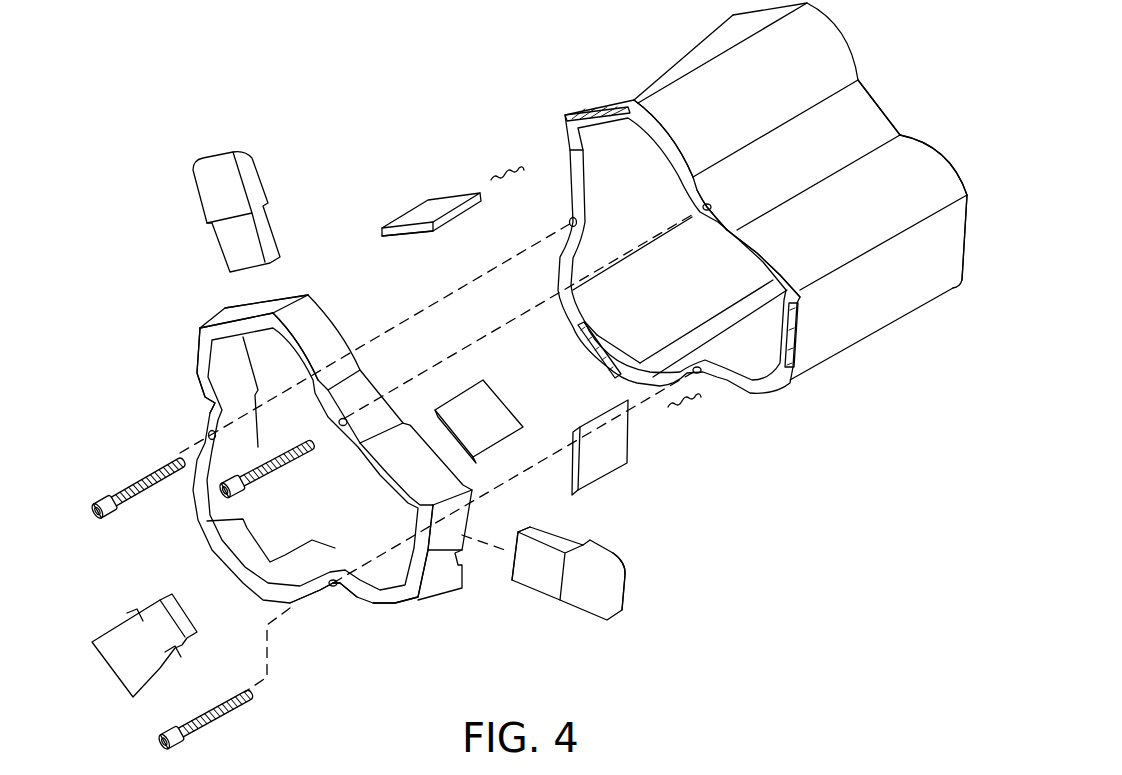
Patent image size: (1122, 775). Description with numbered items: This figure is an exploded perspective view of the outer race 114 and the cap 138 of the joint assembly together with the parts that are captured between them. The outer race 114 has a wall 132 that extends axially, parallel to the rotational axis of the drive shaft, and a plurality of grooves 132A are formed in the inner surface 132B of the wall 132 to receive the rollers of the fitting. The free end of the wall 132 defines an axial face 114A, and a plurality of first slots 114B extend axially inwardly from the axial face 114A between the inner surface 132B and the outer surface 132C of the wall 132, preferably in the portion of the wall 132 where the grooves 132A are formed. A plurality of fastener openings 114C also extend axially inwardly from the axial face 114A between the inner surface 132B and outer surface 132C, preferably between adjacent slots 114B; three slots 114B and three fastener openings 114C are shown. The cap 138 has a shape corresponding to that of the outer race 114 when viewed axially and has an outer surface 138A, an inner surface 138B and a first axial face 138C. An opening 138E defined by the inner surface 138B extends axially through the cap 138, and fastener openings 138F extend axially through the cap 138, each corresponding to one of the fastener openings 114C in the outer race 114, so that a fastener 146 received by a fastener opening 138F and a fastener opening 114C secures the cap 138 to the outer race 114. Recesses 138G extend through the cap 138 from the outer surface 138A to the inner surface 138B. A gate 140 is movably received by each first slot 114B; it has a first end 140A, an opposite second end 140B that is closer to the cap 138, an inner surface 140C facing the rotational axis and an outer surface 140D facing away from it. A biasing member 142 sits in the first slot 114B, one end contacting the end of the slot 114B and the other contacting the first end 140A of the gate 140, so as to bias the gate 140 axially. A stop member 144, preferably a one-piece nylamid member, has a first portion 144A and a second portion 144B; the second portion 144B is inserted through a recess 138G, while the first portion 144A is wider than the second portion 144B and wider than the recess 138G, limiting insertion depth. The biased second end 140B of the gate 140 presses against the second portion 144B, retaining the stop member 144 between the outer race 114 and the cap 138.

The outer race 114 is at (848, 30).
The axial face 114A is at (757, 253).
The first slots 114B is at (617, 140).
The fastener openings 114C is at (737, 180).
The wall 132 is at (866, 125).
The grooves 132A is at (578, 187).
The inner surface 132B is at (660, 170).
The outer surface 132C is at (893, 288).
The cap 138 is at (190, 352).
The outer surface 138A is at (313, 323).
The inner surface 138B is at (228, 375).
The first axial face 138C is at (220, 332).
The opening 138E is at (350, 505).
The fastener openings 138F is at (333, 586).
The recesses 138G is at (255, 305).
The gate 140 is at (518, 316).
The first end 140A is at (630, 435).
The second end 140B is at (407, 233).
The inner surface 140C is at (487, 421).
The outer surface 140D is at (420, 215).
The biasing member 142 is at (500, 168).
The stop member 144 is at (218, 157).
The first portion 144A is at (593, 617).
The second portion 144B is at (532, 592).
The fastener 146 is at (118, 483).